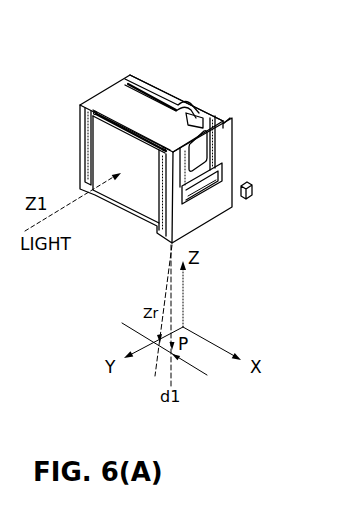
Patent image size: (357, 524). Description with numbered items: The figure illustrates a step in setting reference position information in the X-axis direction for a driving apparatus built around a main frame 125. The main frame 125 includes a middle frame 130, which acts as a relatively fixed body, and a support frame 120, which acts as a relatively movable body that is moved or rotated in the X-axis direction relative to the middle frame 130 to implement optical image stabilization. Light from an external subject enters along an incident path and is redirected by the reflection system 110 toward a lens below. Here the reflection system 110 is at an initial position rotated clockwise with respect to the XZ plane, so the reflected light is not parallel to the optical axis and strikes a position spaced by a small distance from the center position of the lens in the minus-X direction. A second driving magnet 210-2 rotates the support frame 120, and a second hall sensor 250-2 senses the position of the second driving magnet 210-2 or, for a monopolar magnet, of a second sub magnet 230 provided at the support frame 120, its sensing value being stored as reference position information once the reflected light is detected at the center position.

The reflection system 110 is at (100, 147).
The support frame 120 is at (110, 96).
The main frame 125 is at (143, 25).
The middle frame 130 is at (143, 78).
The second sub magnet 230 is at (191, 121).
The second driving magnet 210-2 is at (203, 148).
The second hall sensor 250-2 is at (246, 181).